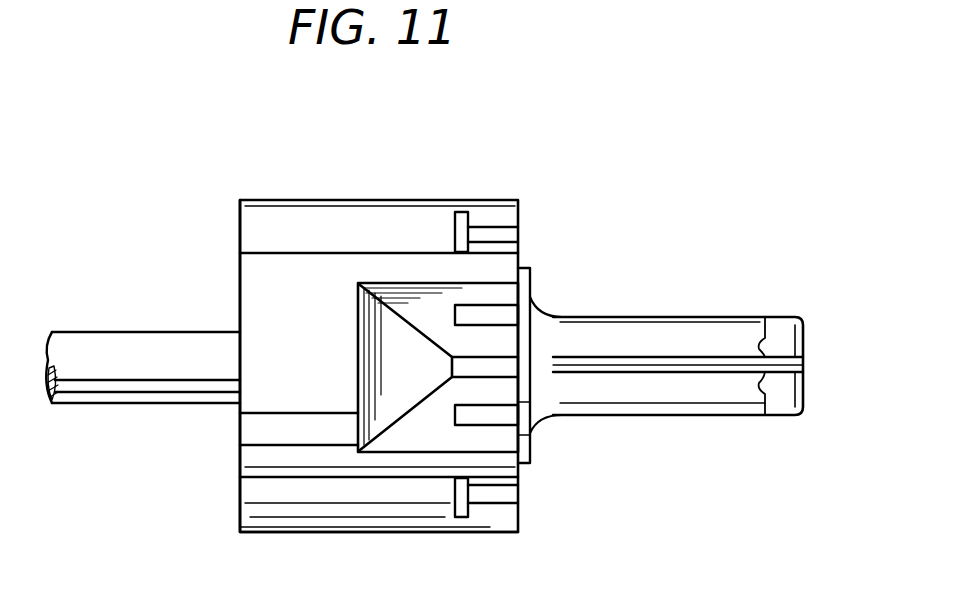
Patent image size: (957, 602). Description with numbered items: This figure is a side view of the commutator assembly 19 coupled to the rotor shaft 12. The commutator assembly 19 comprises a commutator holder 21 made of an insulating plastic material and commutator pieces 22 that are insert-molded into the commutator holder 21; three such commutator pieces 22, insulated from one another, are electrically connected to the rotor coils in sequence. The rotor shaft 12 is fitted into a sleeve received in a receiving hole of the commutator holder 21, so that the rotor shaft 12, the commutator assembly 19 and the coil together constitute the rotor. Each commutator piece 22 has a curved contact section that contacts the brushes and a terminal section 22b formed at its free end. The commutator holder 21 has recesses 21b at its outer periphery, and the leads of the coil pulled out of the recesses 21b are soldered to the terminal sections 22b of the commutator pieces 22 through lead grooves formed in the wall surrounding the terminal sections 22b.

The commutator assembly 19 is at (519, 198).
The commutator holder 21 is at (304, 294).
The terminal section 22b is at (460, 223).
The recesses 21b is at (362, 349).
The commutator pieces 22 is at (611, 343).
The rotor shaft 12 is at (132, 367).